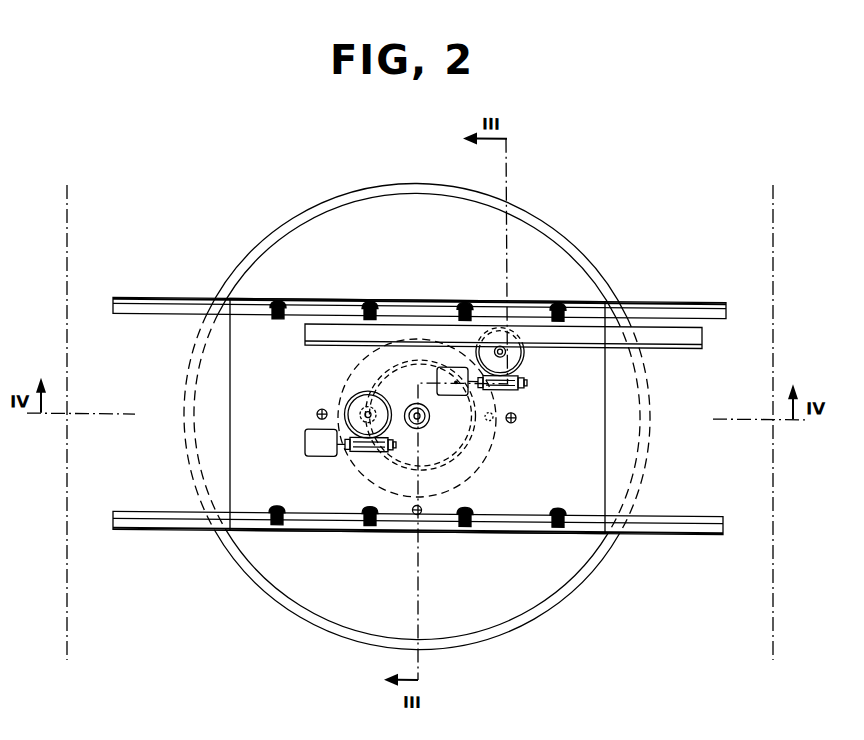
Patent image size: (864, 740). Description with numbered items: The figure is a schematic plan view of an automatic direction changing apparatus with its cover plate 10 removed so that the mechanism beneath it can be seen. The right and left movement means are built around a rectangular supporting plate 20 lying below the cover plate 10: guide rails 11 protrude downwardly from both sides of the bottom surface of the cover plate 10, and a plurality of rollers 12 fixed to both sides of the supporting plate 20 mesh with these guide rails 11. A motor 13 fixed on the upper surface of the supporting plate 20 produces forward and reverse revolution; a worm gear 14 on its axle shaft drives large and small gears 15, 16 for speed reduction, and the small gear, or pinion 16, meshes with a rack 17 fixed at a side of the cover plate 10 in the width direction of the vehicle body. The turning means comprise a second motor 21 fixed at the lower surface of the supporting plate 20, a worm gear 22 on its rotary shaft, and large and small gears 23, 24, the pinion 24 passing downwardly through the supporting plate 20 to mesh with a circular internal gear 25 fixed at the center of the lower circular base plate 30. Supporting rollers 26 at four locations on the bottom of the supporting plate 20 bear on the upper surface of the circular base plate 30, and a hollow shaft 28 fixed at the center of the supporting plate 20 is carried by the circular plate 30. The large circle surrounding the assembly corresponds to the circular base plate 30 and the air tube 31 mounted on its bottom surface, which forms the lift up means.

The cover plate 10 is at (150, 534).
The guide rails 11 is at (178, 300).
The rollers 12 is at (278, 302).
The motor 13 is at (452, 367).
The worm gear 14 is at (512, 388).
The large gear 15 is at (521, 355).
The small gear 16 is at (501, 348).
The rack 17 is at (702, 336).
The supporting plate 20 is at (606, 378).
The motor 21 is at (320, 458).
The worm gear 22 is at (366, 453).
The large gear 23 is at (347, 403).
The small gear 24 is at (366, 414).
The circular internal gear 25 is at (456, 451).
The supporting rollers 26 is at (316, 416).
The hollow shaft 28 is at (428, 420).
The circular base plate 30 is at (524, 209).
The air tube 31 is at (336, 196).